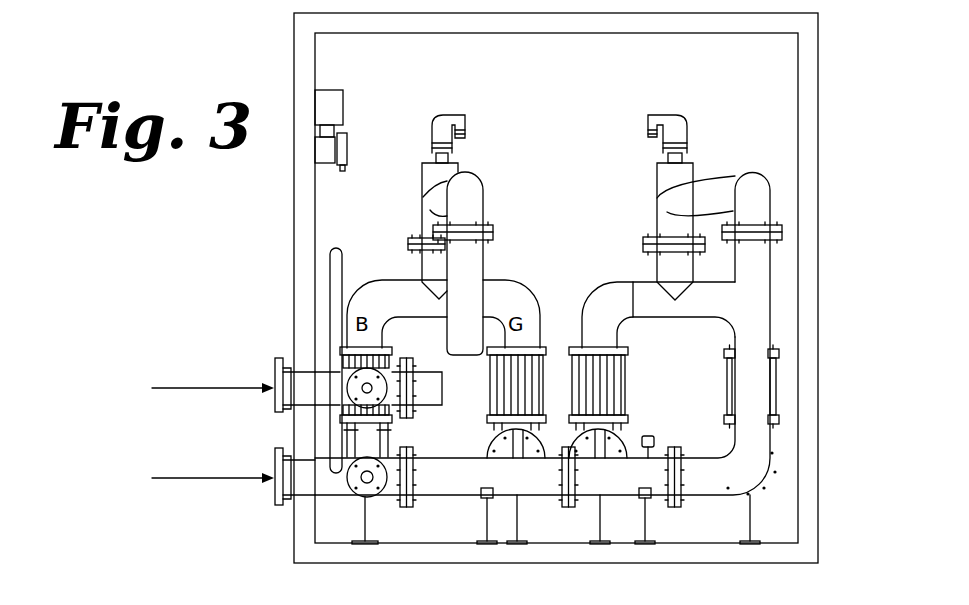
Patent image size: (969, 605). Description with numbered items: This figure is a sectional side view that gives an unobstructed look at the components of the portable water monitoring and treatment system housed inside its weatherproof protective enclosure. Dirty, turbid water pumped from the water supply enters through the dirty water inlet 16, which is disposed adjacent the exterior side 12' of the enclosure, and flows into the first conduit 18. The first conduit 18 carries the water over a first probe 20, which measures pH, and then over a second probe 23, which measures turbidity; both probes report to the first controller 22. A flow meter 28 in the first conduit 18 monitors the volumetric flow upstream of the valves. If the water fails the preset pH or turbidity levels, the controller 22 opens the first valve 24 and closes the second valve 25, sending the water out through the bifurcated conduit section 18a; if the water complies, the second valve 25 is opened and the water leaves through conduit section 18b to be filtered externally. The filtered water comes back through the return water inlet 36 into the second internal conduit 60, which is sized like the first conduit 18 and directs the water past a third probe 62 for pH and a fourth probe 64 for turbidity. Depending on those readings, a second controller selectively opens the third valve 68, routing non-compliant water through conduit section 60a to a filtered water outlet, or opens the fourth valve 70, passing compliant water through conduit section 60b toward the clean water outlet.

The exterior side of the protective enclosure 12' is at (518, 288).
The first controller 22 is at (346, 150).
The return water inlet 36 is at (290, 357).
The dirty water inlet 16 is at (290, 498).
The first probe 20 is at (340, 434).
The third probe 62 is at (345, 267).
The fourth probe 64 is at (364, 391).
The third valve 68 is at (389, 362).
The second probe 23 is at (370, 480).
The conduit section 60a is at (405, 288).
The conduit section 60b is at (495, 287).
The second internal conduit 60 is at (480, 255).
The fourth valve 70 is at (540, 382).
The first valve 24 is at (617, 384).
The bifurcated conduit section 18a is at (606, 302).
The conduit section 18b is at (713, 290).
The first conduit 18 is at (703, 177).
The second valve 25 is at (773, 387).
The flow meter 28 is at (612, 490).